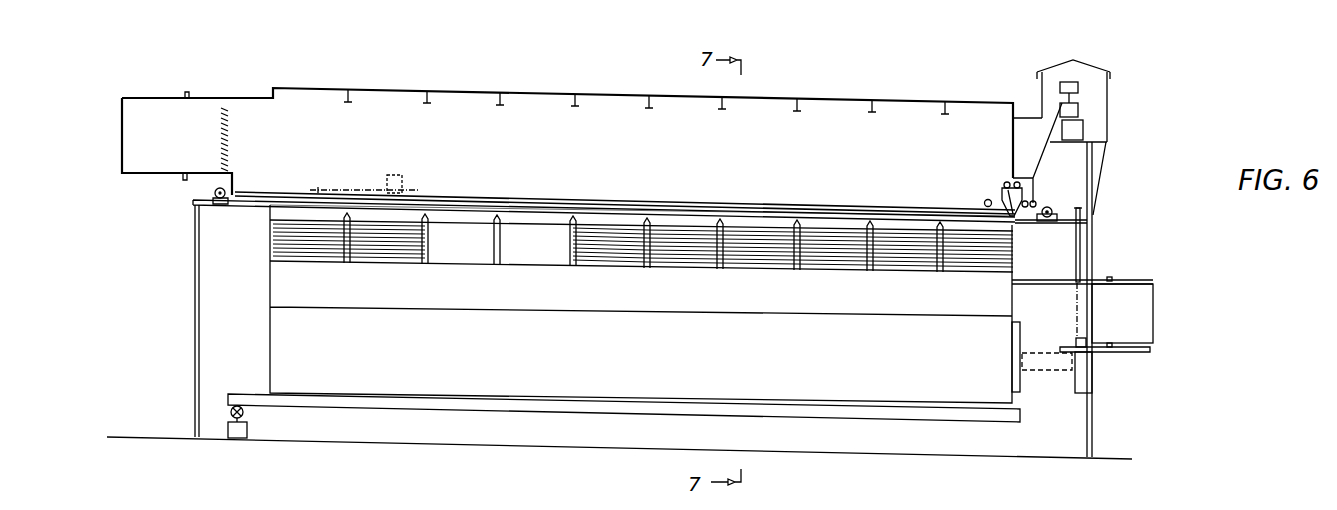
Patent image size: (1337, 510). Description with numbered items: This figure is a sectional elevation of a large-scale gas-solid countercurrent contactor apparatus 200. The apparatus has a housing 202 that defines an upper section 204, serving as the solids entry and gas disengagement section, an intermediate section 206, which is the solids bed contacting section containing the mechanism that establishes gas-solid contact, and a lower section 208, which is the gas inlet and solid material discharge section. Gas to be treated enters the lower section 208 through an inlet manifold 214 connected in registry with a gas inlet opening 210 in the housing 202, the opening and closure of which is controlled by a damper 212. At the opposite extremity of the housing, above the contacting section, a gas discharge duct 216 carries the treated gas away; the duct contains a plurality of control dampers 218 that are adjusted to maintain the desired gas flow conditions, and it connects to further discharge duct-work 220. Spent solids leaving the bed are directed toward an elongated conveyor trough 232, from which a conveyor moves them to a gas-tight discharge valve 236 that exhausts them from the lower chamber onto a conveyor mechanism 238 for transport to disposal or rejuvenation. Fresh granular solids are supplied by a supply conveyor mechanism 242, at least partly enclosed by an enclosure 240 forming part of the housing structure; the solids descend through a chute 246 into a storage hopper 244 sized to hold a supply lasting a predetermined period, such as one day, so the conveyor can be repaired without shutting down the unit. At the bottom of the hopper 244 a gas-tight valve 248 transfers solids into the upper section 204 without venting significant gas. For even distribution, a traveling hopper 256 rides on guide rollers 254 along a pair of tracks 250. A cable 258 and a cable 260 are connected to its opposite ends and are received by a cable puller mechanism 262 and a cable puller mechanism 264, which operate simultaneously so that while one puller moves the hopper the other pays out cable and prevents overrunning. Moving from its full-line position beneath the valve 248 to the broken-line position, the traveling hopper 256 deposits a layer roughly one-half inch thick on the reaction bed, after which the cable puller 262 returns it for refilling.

The countercurrent contactor apparatus 200 is at (545, 90).
The housing 202 is at (623, 95).
The upper section 204 is at (658, 169).
The intermediate section 206 is at (765, 228).
The lower section 208 is at (704, 378).
The gas inlet opening 210 is at (1078, 338).
The damper 212 is at (1082, 252).
The inlet manifold 214 is at (1112, 337).
The gas discharge duct 216 is at (203, 98).
The control dampers 218 is at (229, 127).
The discharge duct-work 220 is at (134, 176).
The conveyor trough 232 is at (848, 413).
The gas-tight discharge valve 236 is at (231, 412).
The conveyor mechanism 238 is at (235, 438).
The enclosure 240 is at (1108, 92).
The supply conveyor mechanism 242 is at (1075, 83).
The storage hopper 244 is at (1028, 112).
The chute 246 is at (1050, 100).
The gas-tight valve 248 is at (1005, 182).
The tracks 250 is at (520, 197).
The guide rollers 254 is at (984, 203).
The traveling hopper 256 is at (396, 175).
The cable 258 is at (1034, 207).
The cable 260 is at (226, 191).
The cable puller mechanism 262 is at (1060, 210).
The cable puller mechanism 264 is at (220, 204).